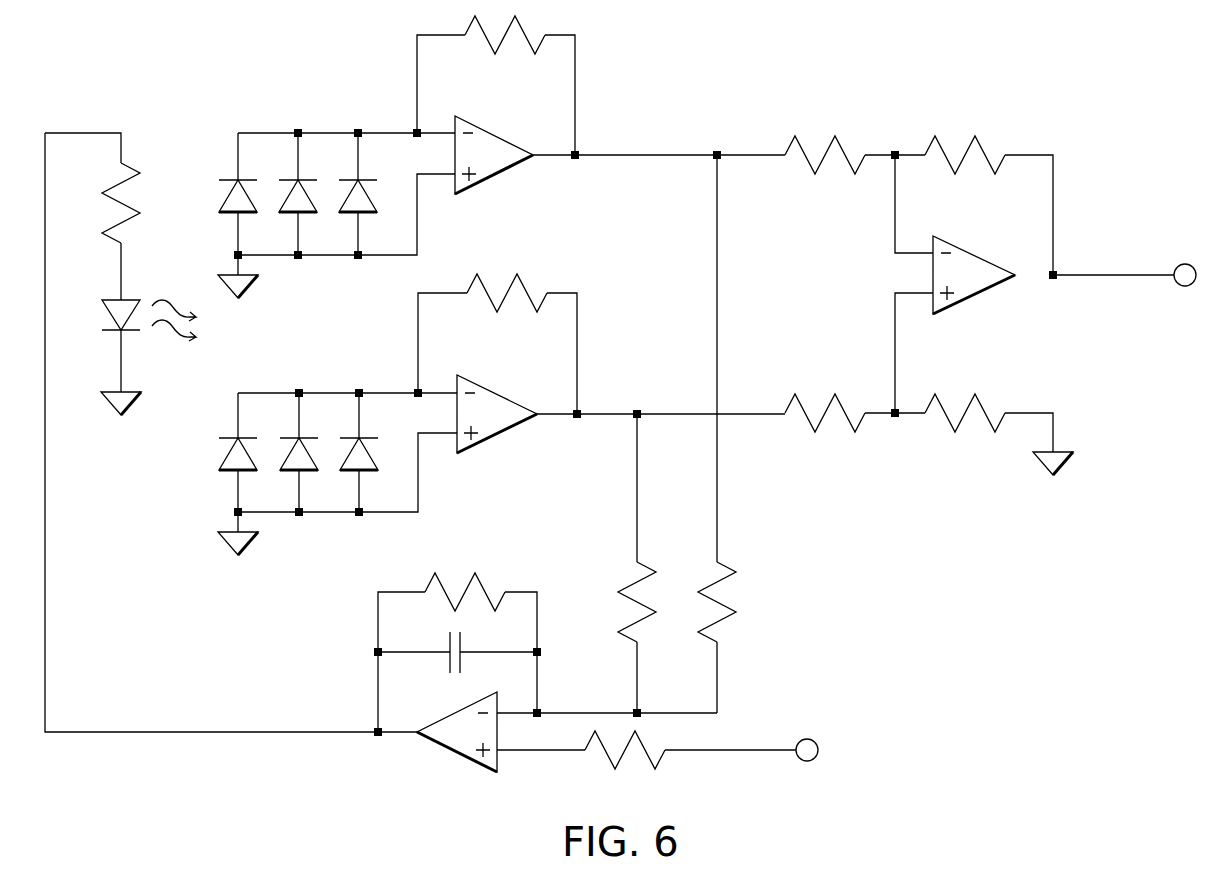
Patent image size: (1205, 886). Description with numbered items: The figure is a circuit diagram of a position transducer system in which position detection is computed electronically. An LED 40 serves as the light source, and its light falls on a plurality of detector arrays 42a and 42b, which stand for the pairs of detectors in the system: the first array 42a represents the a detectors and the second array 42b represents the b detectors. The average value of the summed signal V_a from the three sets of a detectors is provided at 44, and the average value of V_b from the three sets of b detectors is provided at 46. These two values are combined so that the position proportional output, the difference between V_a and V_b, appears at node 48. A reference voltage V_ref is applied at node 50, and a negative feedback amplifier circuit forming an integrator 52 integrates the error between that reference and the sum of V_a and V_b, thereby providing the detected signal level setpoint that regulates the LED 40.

The LED 40 is at (107, 313).
The detector array 42a is at (197, 176).
The detector array 42b is at (192, 462).
The average value of V_a output 44 is at (578, 150).
The average value of V_b output 46 is at (580, 408).
The position proportional output node 48 is at (1184, 264).
The reference voltage node 50 is at (805, 739).
The integrator 52 is at (526, 550).